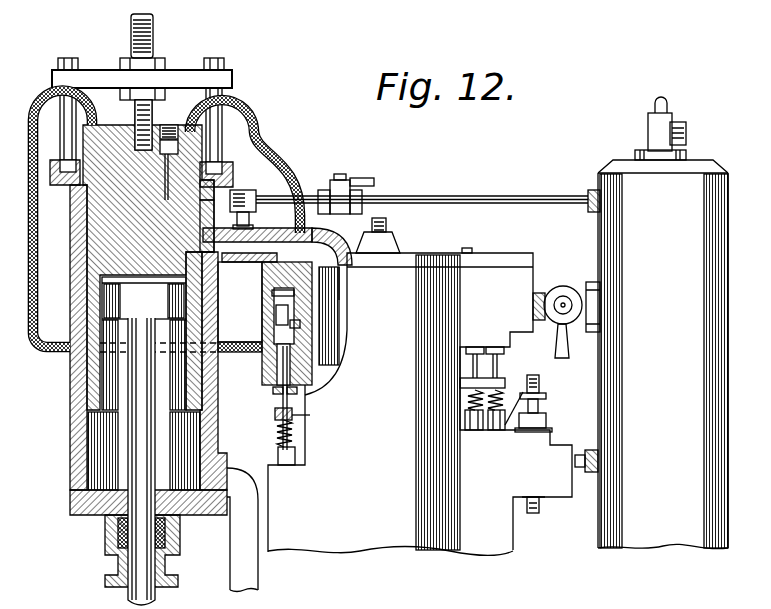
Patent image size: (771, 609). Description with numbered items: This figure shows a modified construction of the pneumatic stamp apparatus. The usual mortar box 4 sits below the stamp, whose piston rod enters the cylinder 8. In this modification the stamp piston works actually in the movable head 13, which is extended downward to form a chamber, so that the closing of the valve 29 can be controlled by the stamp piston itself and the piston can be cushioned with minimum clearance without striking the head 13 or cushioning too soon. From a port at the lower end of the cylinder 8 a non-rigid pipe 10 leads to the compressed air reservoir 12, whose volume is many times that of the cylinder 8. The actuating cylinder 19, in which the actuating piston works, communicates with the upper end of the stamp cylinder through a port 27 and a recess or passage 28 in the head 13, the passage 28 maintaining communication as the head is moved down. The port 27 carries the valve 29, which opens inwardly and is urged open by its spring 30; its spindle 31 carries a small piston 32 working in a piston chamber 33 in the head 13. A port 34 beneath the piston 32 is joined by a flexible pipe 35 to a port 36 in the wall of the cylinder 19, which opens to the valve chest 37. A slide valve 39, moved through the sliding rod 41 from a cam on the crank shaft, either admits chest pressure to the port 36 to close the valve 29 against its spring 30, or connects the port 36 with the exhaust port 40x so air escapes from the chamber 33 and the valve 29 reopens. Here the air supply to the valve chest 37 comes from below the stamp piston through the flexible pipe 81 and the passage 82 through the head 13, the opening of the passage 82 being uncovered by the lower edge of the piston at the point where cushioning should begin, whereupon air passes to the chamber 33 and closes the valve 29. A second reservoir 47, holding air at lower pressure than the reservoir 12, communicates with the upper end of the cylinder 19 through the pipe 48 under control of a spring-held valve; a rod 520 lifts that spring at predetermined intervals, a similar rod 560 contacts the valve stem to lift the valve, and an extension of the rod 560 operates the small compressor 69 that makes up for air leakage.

The mortar box 4 is at (65, 350).
The cylinder 8 is at (78, 437).
The pipe 10 is at (240, 541).
The compressed air reservoir 12 is at (663, 361).
The movable head 13 is at (110, 235).
The actuating cylinder 19 is at (420, 402).
The port 27 is at (160, 283).
The recess or passage 28 is at (232, 190).
The valve 29 is at (217, 282).
The spring 30 is at (144, 405).
The valve spindle 31 is at (201, 225).
The small piston 32 is at (168, 126).
The piston chamber 33 is at (201, 190).
The port 34 is at (206, 143).
The flexible pipe 35 is at (273, 142).
The port 36 is at (276, 312).
The valve chest 37 is at (271, 300).
The slide valve 39 is at (262, 350).
The exhaust port 40x is at (300, 325).
The sliding rod 41 is at (278, 453).
The reservoir 47 is at (663, 168).
The pipe 48 is at (560, 288).
The compressor 69 is at (572, 488).
The flexible pipe 81 is at (38, 300).
The passage 82 is at (78, 202).
The rod 520 is at (478, 430).
The rod 560 is at (505, 428).